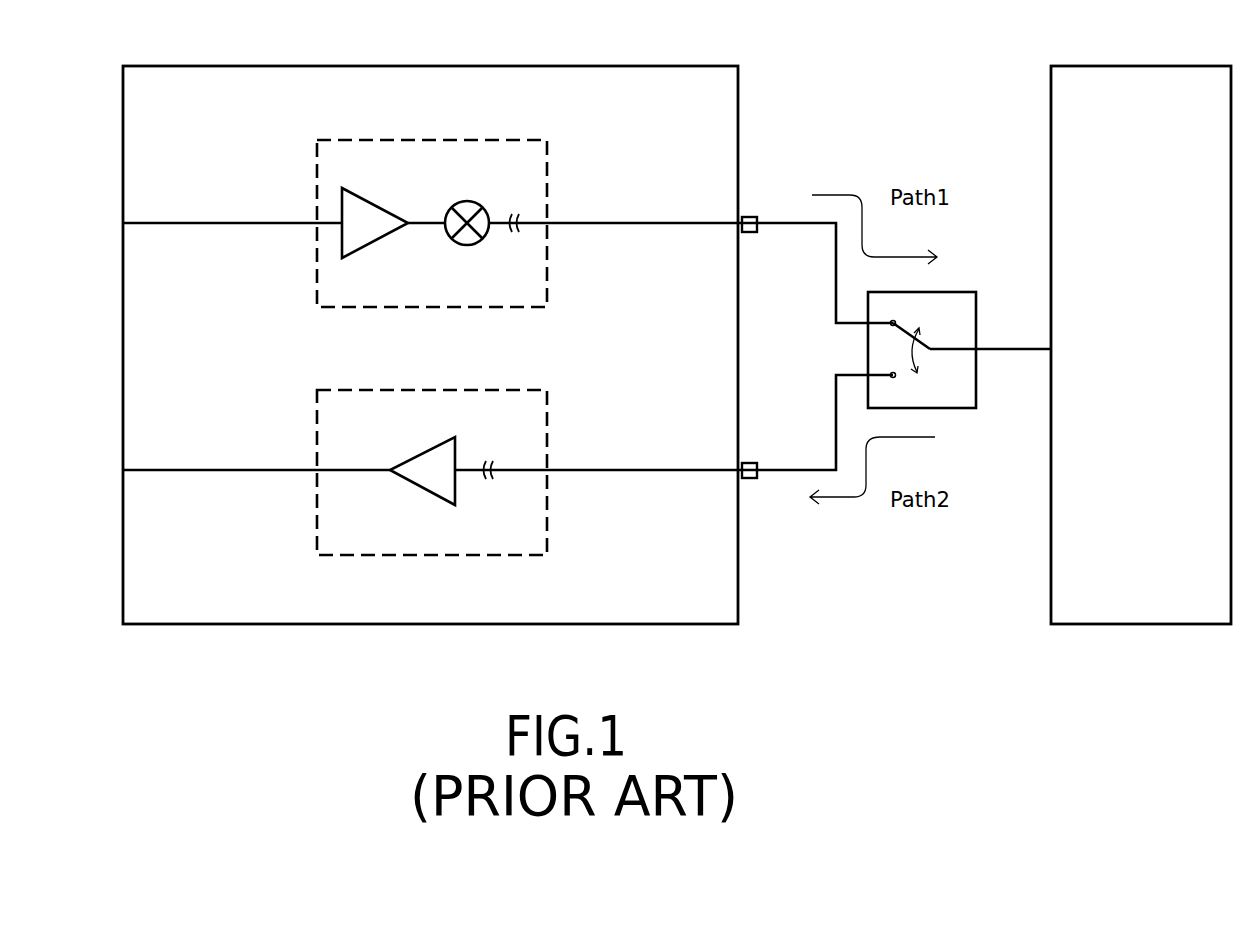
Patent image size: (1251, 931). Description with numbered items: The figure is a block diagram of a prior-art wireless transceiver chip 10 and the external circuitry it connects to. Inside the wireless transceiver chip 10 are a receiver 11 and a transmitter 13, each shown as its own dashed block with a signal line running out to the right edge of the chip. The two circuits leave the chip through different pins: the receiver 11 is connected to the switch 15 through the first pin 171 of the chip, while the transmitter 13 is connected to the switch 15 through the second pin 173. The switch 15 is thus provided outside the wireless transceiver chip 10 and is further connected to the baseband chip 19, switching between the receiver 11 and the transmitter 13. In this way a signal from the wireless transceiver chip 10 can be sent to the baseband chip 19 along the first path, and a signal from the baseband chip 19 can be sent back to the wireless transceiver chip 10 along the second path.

The wireless transceiver chip 10 is at (638, 66).
The receiver 11 is at (437, 145).
The transmitter 13 is at (437, 395).
The switch 15 is at (963, 298).
The baseband chip 19 is at (1156, 356).
The first pin 171 is at (750, 217).
The second pin 173 is at (750, 478).